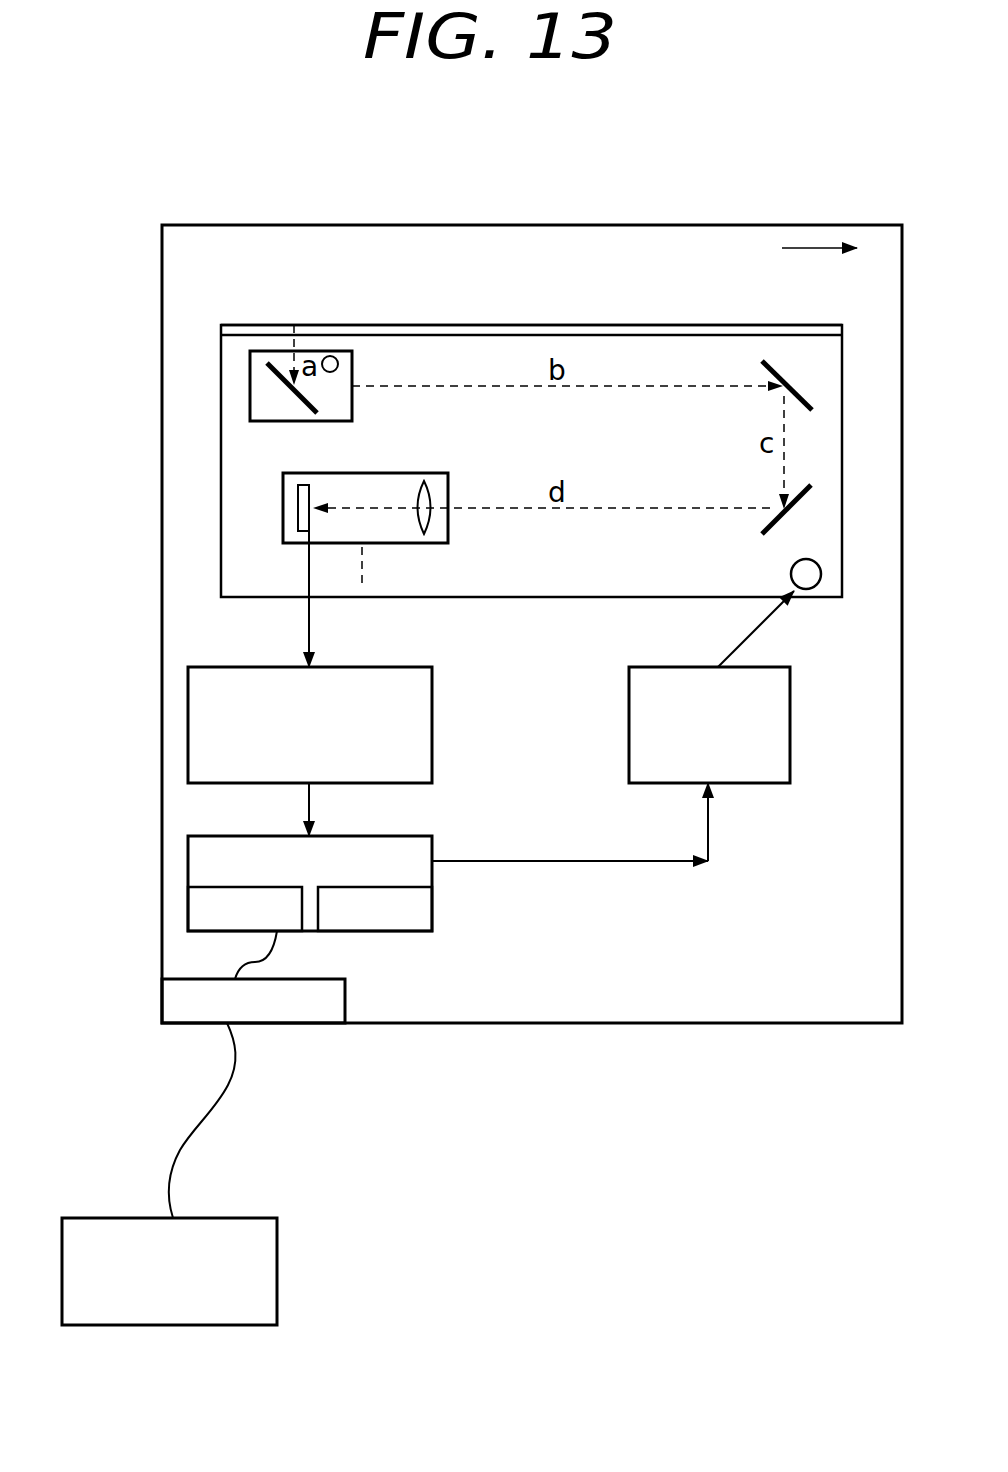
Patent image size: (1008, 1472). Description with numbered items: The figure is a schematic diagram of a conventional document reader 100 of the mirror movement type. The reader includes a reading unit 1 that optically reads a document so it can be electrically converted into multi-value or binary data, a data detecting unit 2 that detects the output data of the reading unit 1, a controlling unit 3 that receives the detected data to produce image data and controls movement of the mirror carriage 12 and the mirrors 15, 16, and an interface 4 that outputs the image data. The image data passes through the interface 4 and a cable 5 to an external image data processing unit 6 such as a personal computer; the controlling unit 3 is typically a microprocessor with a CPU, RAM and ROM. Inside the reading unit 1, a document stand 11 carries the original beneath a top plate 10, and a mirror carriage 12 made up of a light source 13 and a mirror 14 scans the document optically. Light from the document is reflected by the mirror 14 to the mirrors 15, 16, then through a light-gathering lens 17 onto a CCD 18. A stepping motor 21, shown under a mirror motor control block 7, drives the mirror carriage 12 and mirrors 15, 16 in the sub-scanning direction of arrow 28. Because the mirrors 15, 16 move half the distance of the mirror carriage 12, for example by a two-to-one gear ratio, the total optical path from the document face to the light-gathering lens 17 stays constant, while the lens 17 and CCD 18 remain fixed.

The document reader 100 is at (870, 105).
The arrow 28 is at (813, 238).
The reading unit 1 is at (843, 383).
The platen glass 10 is at (601, 325).
The document stand 11 is at (721, 327).
The mirror carriage 12 is at (353, 363).
The light source 13 is at (336, 357).
The mirror 14 is at (297, 393).
The mirror 15 is at (786, 368).
The mirror 16 is at (768, 524).
The light-gathering lens 17 is at (430, 515).
The CCD 18 is at (298, 507).
The stepping motor 21 is at (790, 574).
The data detecting unit 2 is at (408, 667).
The controlling unit 3 is at (412, 836).
The mirror motor control unit 7 is at (760, 667).
The interface 4 is at (346, 1000).
The cable 5 is at (214, 1116).
The image data processing unit 6 is at (240, 1218).